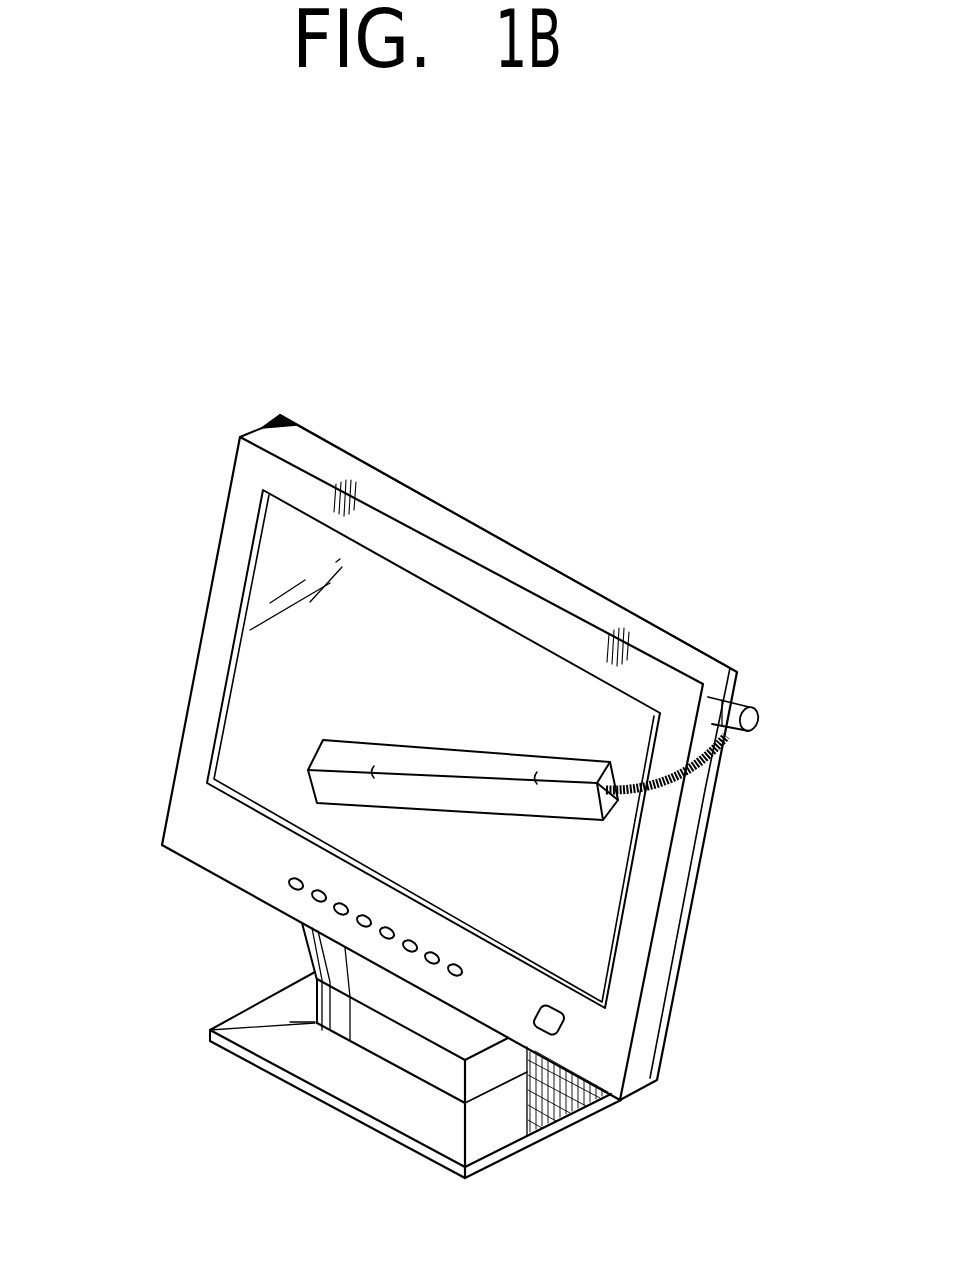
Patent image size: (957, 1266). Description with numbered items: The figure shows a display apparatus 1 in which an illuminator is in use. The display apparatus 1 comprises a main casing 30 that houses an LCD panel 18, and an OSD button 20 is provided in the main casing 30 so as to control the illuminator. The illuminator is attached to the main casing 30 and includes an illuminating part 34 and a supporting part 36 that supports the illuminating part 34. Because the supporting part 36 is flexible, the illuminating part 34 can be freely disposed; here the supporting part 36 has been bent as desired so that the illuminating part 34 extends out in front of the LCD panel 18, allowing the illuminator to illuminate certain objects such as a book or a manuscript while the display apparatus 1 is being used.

The display apparatus 1 is at (797, 632).
The LCD panel 18 is at (273, 656).
The OSD button 20 is at (312, 899).
The main casing 30 is at (210, 833).
The illuminating part 34 is at (495, 803).
The supporting part 36 is at (716, 779).